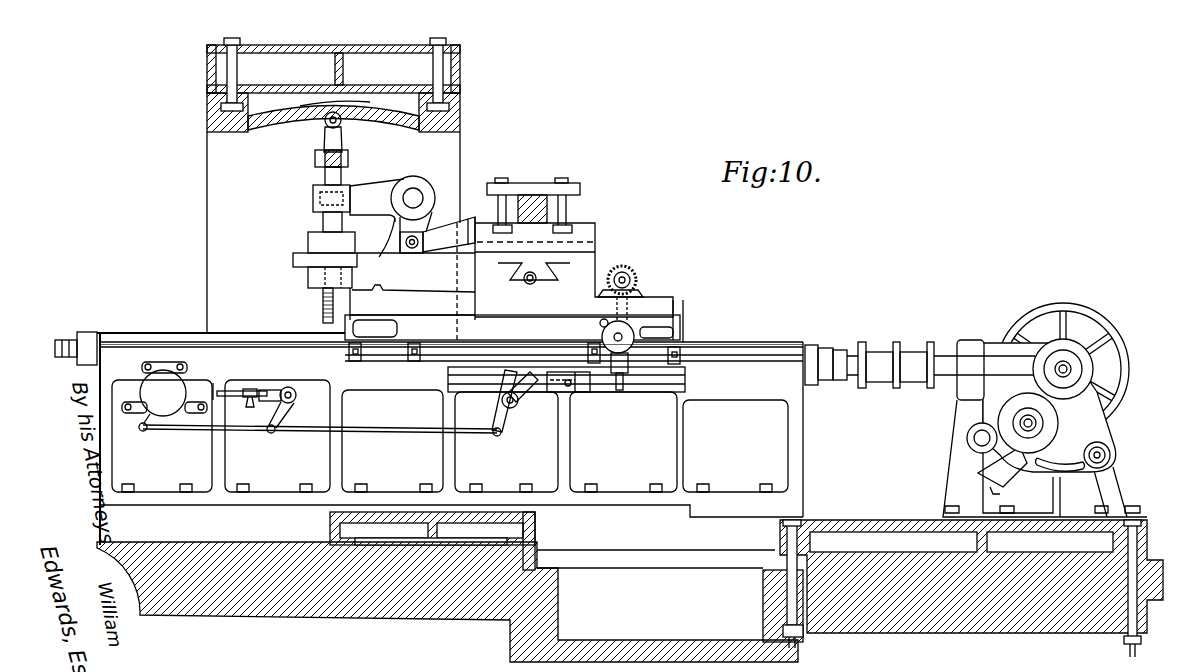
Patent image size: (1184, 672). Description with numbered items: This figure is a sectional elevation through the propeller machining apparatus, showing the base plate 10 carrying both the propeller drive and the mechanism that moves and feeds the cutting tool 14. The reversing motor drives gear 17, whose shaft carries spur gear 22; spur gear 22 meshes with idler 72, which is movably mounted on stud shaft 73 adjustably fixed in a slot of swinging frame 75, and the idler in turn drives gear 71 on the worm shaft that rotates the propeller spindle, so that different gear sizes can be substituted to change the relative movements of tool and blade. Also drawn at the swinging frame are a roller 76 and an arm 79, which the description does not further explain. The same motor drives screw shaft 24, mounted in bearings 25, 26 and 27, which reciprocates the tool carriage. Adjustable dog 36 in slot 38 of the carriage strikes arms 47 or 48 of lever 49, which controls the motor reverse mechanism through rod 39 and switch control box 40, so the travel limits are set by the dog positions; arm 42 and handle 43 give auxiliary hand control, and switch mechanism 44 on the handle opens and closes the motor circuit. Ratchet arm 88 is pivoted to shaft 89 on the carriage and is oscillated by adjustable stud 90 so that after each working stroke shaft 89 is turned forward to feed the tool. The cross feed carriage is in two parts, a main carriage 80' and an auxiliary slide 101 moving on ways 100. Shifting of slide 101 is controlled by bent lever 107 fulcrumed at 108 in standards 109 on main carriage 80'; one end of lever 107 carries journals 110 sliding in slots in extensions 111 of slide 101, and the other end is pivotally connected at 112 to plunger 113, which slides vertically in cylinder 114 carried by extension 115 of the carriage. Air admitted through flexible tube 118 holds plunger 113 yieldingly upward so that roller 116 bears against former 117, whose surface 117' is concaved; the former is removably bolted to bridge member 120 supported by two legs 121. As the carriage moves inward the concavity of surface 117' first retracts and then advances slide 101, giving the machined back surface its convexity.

The base plate 10 is at (893, 520).
The cutting tool 14 is at (532, 196).
The gear 17 is at (1068, 303).
The spur gear 22 is at (1094, 362).
The screw shaft 24 is at (943, 358).
The bearing 25 is at (968, 340).
The bearing 26 is at (826, 352).
The bearing 27 is at (97, 372).
The adjustable dog 36 is at (412, 364).
The slot 38 is at (431, 366).
The rod 39 is at (392, 431).
The switch control box 40 is at (164, 396).
The arm 42 is at (292, 407).
The handle 43 is at (220, 391).
The switch mechanism 44 is at (249, 409).
The arm 47 is at (503, 392).
The arm 48 is at (525, 387).
The lever 49 is at (503, 410).
The gear 71 is at (966, 435).
The idler 72 is at (1019, 398).
The stud shaft 73 is at (1037, 423).
The swinging frame 75 is at (1068, 407).
The roller 76 is at (1112, 455).
The arm 79 is at (991, 486).
The main carriage 80' is at (587, 262).
The ratchet arm 88 is at (631, 374).
The shaft 89 is at (628, 325).
The adjustable stud 90 is at (583, 385).
The ways 100 is at (600, 243).
The auxiliary slide 101 is at (585, 228).
The bent lever 107 is at (381, 185).
The fulcrum 108 is at (416, 196).
The standards 109 is at (387, 244).
The journals 110 is at (412, 248).
The extensions 111 is at (468, 222).
The pivotal connection 112 is at (313, 199).
The plunger 113 is at (318, 176).
The cylinder 114 is at (312, 280).
The extension 115 is at (293, 261).
The roller 116 is at (342, 121).
The former 117 is at (322, 136).
The former surface 117' is at (326, 121).
The flexible tube 118 is at (323, 312).
The bridge member 120 is at (207, 68).
The legs 121 is at (213, 177).